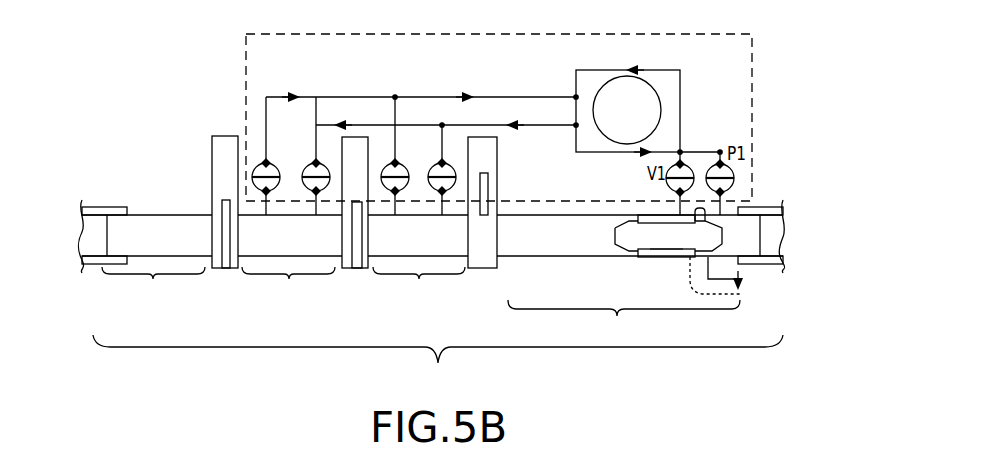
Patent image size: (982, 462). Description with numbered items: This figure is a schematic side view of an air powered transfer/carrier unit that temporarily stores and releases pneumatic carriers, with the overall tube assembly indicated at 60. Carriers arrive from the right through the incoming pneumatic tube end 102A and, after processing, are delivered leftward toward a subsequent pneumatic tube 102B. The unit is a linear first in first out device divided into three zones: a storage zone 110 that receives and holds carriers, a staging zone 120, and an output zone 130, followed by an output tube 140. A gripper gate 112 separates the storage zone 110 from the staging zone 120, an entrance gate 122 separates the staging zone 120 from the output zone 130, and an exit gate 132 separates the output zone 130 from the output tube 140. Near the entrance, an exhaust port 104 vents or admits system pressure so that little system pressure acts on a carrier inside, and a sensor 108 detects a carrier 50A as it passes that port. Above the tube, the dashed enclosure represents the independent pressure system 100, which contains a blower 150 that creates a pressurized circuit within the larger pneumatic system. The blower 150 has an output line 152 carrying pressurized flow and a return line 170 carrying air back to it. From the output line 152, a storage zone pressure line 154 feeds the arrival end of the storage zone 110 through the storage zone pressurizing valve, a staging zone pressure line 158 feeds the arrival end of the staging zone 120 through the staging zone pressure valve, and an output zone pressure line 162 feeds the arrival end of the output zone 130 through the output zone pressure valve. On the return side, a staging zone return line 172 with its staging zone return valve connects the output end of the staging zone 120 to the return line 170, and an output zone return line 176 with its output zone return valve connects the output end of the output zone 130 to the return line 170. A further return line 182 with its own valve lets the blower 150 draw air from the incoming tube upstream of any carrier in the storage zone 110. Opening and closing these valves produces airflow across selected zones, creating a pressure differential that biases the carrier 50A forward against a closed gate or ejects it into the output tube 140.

The independent pressure system 100 is at (750, 34).
The incoming pneumatic tube end 102A is at (776, 263).
The pneumatic tube 102B is at (80, 193).
The exhaust port 104 is at (733, 287).
The sensor 108 is at (706, 210).
The storage zone 110 is at (624, 325).
The gripper gate 112 is at (488, 190).
The staging zone 120 is at (419, 287).
The entrance gate 122 is at (357, 240).
The output zone 130 is at (288, 287).
The exit gate 132 is at (222, 207).
The output tube 140 is at (153, 287).
The blower 150 is at (644, 82).
The output line 152 is at (524, 126).
The storage zone pressure line 154 is at (604, 155).
The staging zone pressure line 158 is at (442, 128).
The output zone pressure line 162 is at (318, 118).
The return line 170 is at (505, 97).
The staging zone return line 172 is at (395, 100).
The output zone return line 176 is at (266, 105).
The return line 182 is at (680, 95).
The carrier 50A is at (668, 236).
The pipe assembly 60 is at (438, 365).